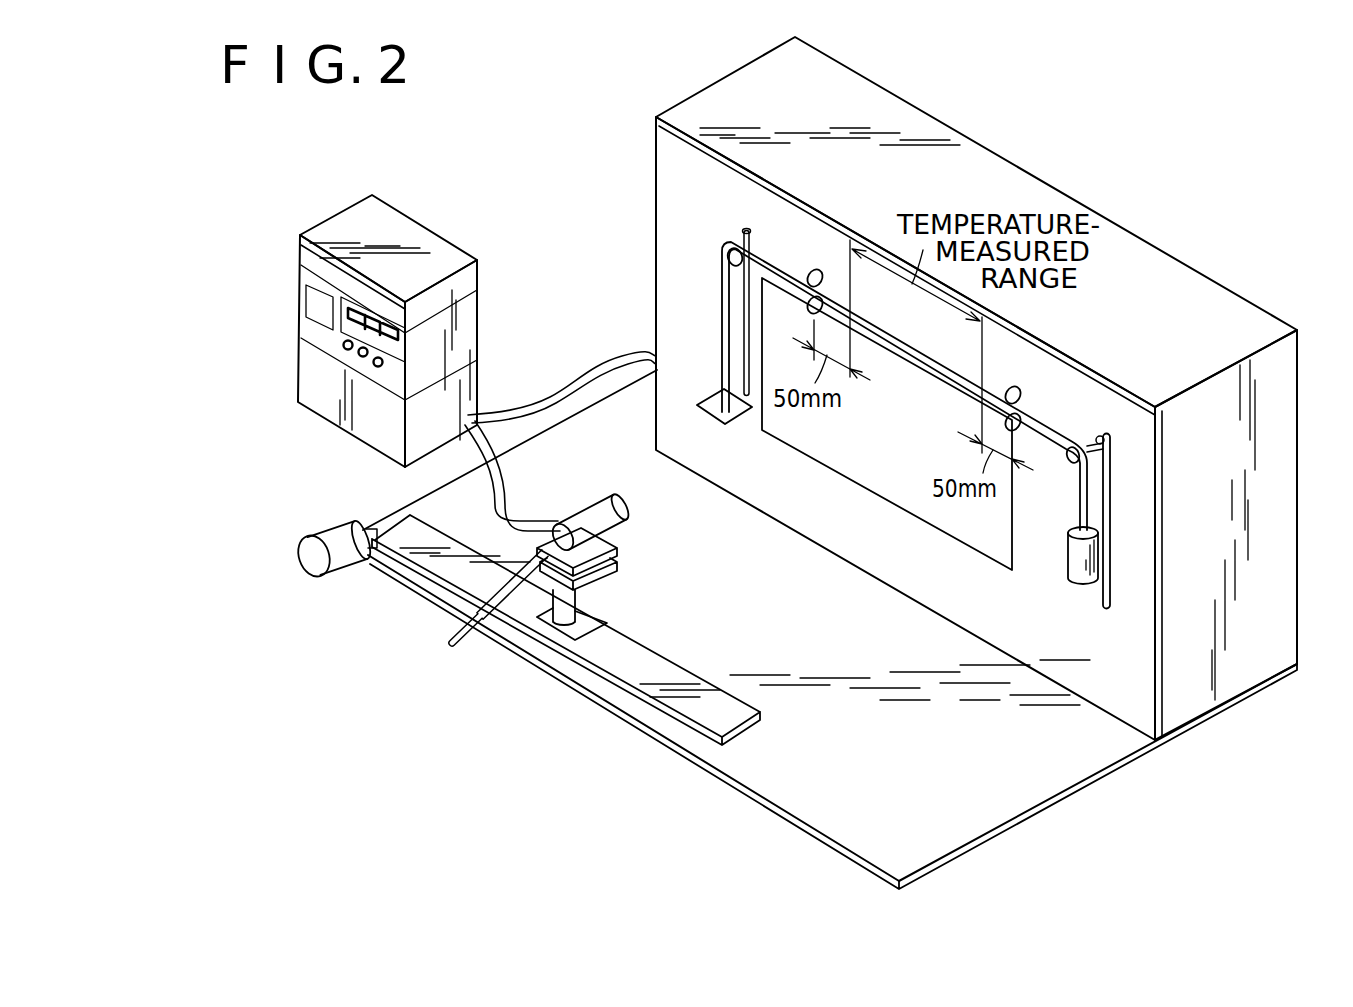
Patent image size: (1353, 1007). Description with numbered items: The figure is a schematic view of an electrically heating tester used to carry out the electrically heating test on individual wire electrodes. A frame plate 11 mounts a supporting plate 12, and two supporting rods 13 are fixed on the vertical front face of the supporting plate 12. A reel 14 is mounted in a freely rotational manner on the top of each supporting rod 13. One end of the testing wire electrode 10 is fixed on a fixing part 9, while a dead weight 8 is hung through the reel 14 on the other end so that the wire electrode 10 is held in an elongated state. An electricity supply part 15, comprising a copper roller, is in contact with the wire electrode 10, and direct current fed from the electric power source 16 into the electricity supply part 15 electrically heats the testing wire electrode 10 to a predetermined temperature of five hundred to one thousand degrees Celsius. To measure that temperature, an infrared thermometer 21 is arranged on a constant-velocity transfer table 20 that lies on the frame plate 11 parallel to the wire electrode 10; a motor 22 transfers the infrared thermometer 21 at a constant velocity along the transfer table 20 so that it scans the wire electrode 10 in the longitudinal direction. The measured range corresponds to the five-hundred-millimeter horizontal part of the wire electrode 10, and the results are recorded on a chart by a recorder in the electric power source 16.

The dead weight 8 is at (1068, 572).
The fixing part 9 is at (744, 416).
The testing wire electrode 10 is at (893, 332).
The frame plate 11 is at (772, 775).
The supporting plate 12 is at (1128, 238).
The supporting rod 13 is at (740, 335).
The reel 14 is at (727, 257).
The electricity supply part 15 is at (814, 269).
The electric power source 16 is at (447, 252).
The constant-velocity transfer table 20 is at (652, 663).
The infrared thermometer 21 is at (587, 513).
The motor 22 is at (318, 525).